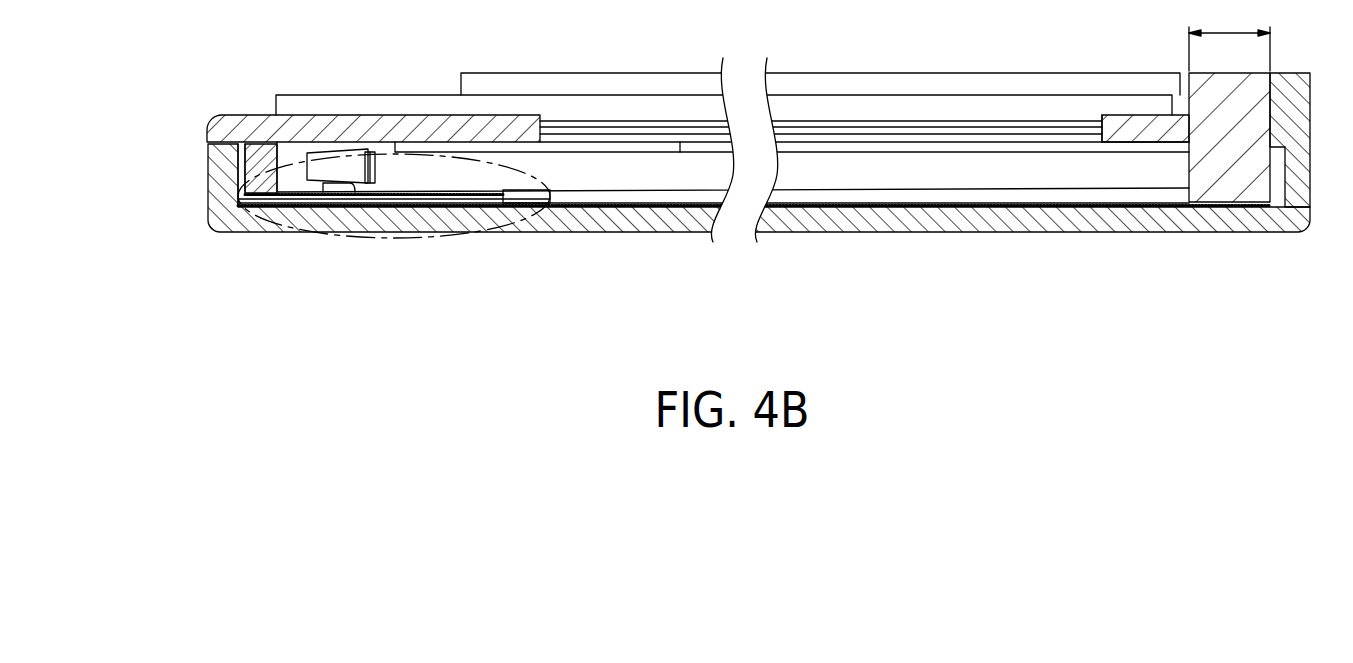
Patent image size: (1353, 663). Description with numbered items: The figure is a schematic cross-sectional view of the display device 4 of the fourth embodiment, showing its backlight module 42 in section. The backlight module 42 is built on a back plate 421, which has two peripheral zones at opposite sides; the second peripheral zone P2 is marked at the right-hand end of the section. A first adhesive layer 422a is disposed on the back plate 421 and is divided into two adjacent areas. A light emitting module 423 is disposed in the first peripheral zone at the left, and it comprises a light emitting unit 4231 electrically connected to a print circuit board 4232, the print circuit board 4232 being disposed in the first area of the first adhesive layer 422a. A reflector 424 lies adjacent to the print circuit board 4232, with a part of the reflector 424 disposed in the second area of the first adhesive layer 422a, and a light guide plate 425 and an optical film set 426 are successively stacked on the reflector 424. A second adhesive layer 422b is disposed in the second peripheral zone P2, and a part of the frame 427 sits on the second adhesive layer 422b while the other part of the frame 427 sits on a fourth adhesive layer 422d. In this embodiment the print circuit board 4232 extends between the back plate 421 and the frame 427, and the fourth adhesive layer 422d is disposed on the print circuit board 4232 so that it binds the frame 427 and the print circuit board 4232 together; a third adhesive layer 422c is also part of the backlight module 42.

The display device 4 is at (172, 36).
The backlight module 42 is at (298, 325).
The back plate 421 is at (833, 218).
The first adhesive layer 422a is at (293, 205).
The second adhesive layer 422b is at (1240, 205).
The third adhesive layer 422c is at (485, 193).
The fourth adhesive layer 422d is at (268, 228).
The light emitting module 423 is at (487, 281).
The light emitting unit 4231 is at (361, 168).
The print circuit board 4232 is at (455, 197).
The reflector 424 is at (922, 190).
The light guide plate 425 is at (1013, 160).
The optical film set 426 is at (1077, 122).
The frame 427 is at (1213, 180).
The second peripheral zone P2 is at (1229, 38).